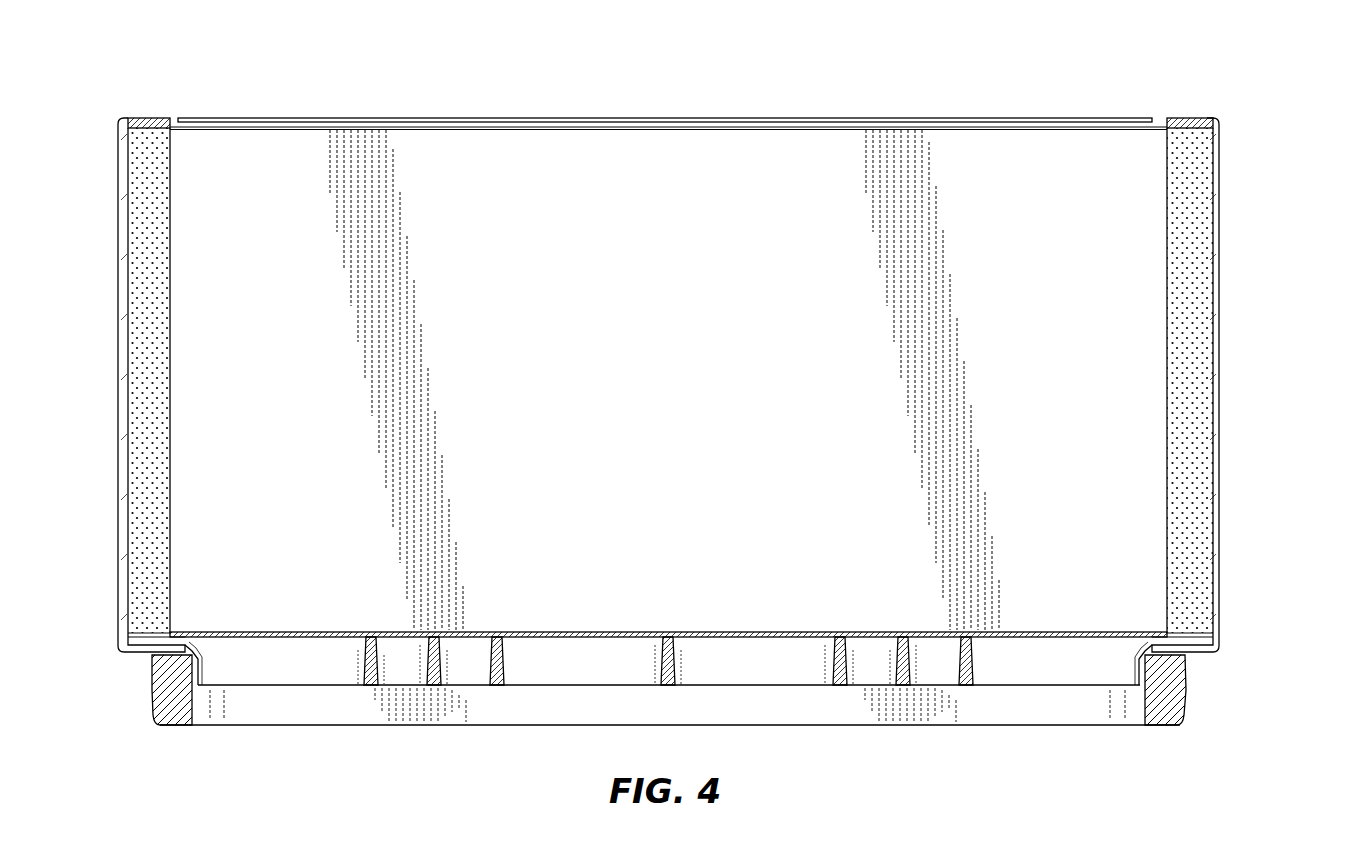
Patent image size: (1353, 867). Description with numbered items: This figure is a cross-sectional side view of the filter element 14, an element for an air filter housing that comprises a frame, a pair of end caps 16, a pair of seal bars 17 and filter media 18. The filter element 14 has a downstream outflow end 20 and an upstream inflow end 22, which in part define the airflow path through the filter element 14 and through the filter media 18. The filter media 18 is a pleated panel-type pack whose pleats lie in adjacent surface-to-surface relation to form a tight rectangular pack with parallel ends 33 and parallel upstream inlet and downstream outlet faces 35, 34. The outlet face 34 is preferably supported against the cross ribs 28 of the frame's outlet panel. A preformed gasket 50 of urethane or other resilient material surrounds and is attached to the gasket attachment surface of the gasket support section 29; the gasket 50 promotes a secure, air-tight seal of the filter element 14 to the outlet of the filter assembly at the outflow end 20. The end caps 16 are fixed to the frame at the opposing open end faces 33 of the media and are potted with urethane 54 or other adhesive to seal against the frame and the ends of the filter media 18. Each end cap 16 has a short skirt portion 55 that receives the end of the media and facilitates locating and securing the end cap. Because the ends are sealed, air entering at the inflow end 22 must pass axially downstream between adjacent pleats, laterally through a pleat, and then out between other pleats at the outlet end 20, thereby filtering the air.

The filter element 14 is at (691, 373).
The end cap 16 is at (120, 385).
The seal bar 17 is at (1093, 121).
The filter media 18 is at (831, 172).
The downstream outflow end 20 is at (311, 637).
The upstream inflow end 22 is at (668, 87).
The cross rib 28 is at (997, 662).
The gasket support section 29 is at (185, 695).
The end 33 is at (140, 298).
The downstream outlet face 34 is at (564, 637).
The upstream inlet face 35 is at (646, 127).
The preformed gasket 50 is at (1185, 677).
The urethane 54 is at (140, 530).
The skirt portion 55 is at (142, 118).